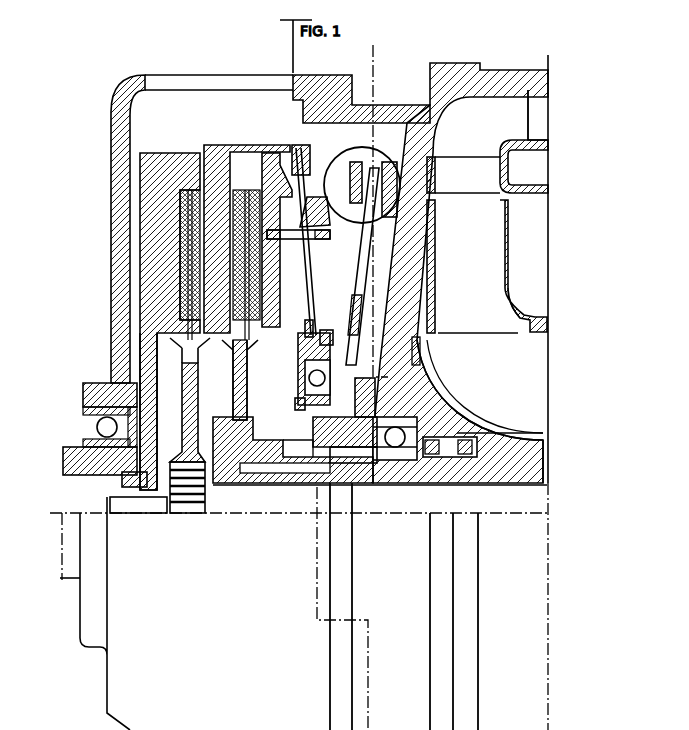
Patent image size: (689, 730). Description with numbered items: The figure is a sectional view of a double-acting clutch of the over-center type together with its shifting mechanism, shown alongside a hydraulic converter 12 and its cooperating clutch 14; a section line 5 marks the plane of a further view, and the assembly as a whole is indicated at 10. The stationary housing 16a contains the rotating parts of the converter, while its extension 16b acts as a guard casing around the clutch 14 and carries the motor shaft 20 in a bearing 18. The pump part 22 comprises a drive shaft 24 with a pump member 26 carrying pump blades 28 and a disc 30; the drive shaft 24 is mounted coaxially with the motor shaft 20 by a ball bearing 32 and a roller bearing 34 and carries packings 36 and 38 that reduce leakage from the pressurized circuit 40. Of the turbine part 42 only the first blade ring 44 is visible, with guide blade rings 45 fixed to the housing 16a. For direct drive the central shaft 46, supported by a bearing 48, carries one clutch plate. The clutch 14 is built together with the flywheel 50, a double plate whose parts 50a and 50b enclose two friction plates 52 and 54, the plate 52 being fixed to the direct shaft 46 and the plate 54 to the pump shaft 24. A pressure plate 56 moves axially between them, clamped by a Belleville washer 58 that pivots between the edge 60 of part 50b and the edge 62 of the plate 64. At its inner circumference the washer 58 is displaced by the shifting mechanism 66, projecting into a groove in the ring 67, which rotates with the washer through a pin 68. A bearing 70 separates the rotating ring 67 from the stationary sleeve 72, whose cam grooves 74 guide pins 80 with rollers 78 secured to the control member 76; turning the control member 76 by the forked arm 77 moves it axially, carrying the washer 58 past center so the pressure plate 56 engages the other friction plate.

The section line 5 is at (373, 57).
The motor assembly 10 is at (256, 485).
The hydraulic converter 12 is at (490, 136).
The clutch 14 is at (82, 210).
The stationary housing 16a is at (455, 72).
The extension of housing 16b is at (138, 74).
The bearing 18 is at (83, 402).
The motor shaft 20 is at (72, 458).
The pump part 22 is at (470, 213).
The drive shaft 24 is at (518, 446).
The pump member 26 is at (455, 402).
The pump blades 28 is at (477, 320).
The disc 30 is at (512, 300).
The ball bearing 32 is at (405, 470).
The roller bearing 34 is at (280, 485).
The packing 36 is at (478, 433).
The packing 38 is at (465, 457).
The circuit 40 is at (530, 387).
The turbine part 42 is at (548, 147).
The first blade ring 44 is at (481, 186).
The guide blade rings 45 is at (540, 107).
The central shaft 46 is at (530, 502).
The bearing 48 is at (135, 488).
The flywheel 50 is at (161, 307).
The flywheel part 50a is at (160, 180).
The flywheel part 50b is at (274, 160).
The friction plate 52 is at (137, 360).
The friction plate 54 is at (236, 393).
The pressure plate 56 is at (214, 180).
The Belleville washer 58 is at (313, 262).
The edge 60 is at (294, 241).
The edge 62 is at (312, 200).
The plate 64 is at (336, 214).
The shifting mechanism 66 is at (290, 375).
The ring 67 is at (328, 334).
The pin 68 is at (305, 336).
The bearing 70 is at (414, 357).
The sleeve 72 is at (374, 395).
The cam grooves 74 is at (385, 487).
The control member 76 is at (297, 402).
The forked arm 77 is at (364, 272).
The rollers 78 is at (330, 450).
The pins 80 is at (300, 475).